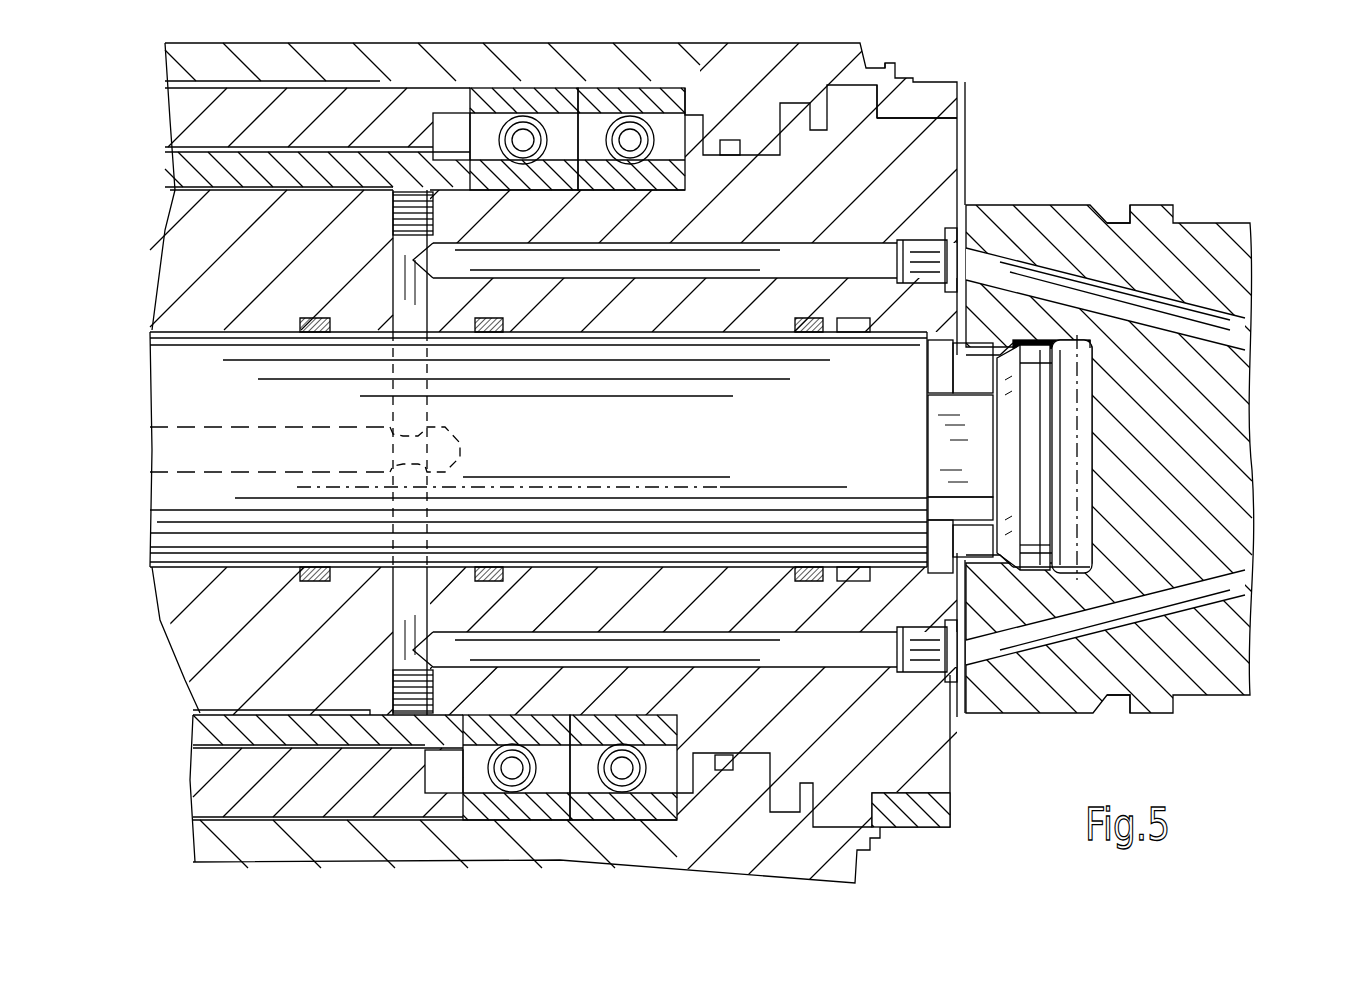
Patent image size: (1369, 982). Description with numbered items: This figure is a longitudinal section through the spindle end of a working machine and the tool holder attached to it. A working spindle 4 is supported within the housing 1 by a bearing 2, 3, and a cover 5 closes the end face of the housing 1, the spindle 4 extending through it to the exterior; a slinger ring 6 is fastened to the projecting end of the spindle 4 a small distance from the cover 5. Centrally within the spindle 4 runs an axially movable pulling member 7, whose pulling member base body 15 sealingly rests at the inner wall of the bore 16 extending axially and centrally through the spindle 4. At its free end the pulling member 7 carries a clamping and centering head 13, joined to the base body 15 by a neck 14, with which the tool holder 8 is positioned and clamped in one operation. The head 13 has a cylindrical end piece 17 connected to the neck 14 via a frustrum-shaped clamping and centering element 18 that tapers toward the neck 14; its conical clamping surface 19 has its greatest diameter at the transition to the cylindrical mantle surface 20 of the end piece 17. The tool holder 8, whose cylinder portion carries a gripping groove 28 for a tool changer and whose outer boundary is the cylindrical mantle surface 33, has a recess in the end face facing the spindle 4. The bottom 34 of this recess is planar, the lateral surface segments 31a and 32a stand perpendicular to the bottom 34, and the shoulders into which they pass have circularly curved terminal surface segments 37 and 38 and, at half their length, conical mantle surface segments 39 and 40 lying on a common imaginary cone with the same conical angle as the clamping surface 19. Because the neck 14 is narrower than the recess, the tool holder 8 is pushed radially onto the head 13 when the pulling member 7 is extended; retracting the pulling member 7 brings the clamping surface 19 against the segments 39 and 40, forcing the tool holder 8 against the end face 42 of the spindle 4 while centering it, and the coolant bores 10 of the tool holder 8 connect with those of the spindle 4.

The housing 1 is at (470, 65).
The bearing 2 is at (530, 115).
The bearing 3 is at (596, 122).
The working spindle 4 is at (288, 215).
The cover 5 is at (832, 55).
The slinger ring 6 is at (930, 110).
The pulling member 7 is at (166, 541).
The tool holder 8 is at (1080, 221).
The coolant bores 10 is at (1110, 300).
The clamping and centering head 13 is at (1060, 436).
The neck 14 is at (985, 545).
The pulling member base body 15 is at (806, 428).
The bore 16 is at (612, 338).
The end piece 17 is at (1030, 528).
The clamping and centering element 18 is at (1012, 392).
The clamping surface 19 is at (1068, 580).
The cylindrical mantle surface 20 is at (1005, 348).
The gripping groove 28 is at (1112, 220).
The lateral surface segment 31a is at (1090, 352).
The lateral surface segment 32a is at (1130, 690).
The cylindrical mantle surface 33 is at (1013, 345).
The bottom 34 is at (1092, 478).
The terminal surface segment 37 is at (975, 360).
The terminal surface segment 38 is at (930, 520).
The conical mantle surface segment 39 is at (1007, 357).
The conical mantle surface segment 40 is at (1000, 562).
The end face 42 is at (952, 745).